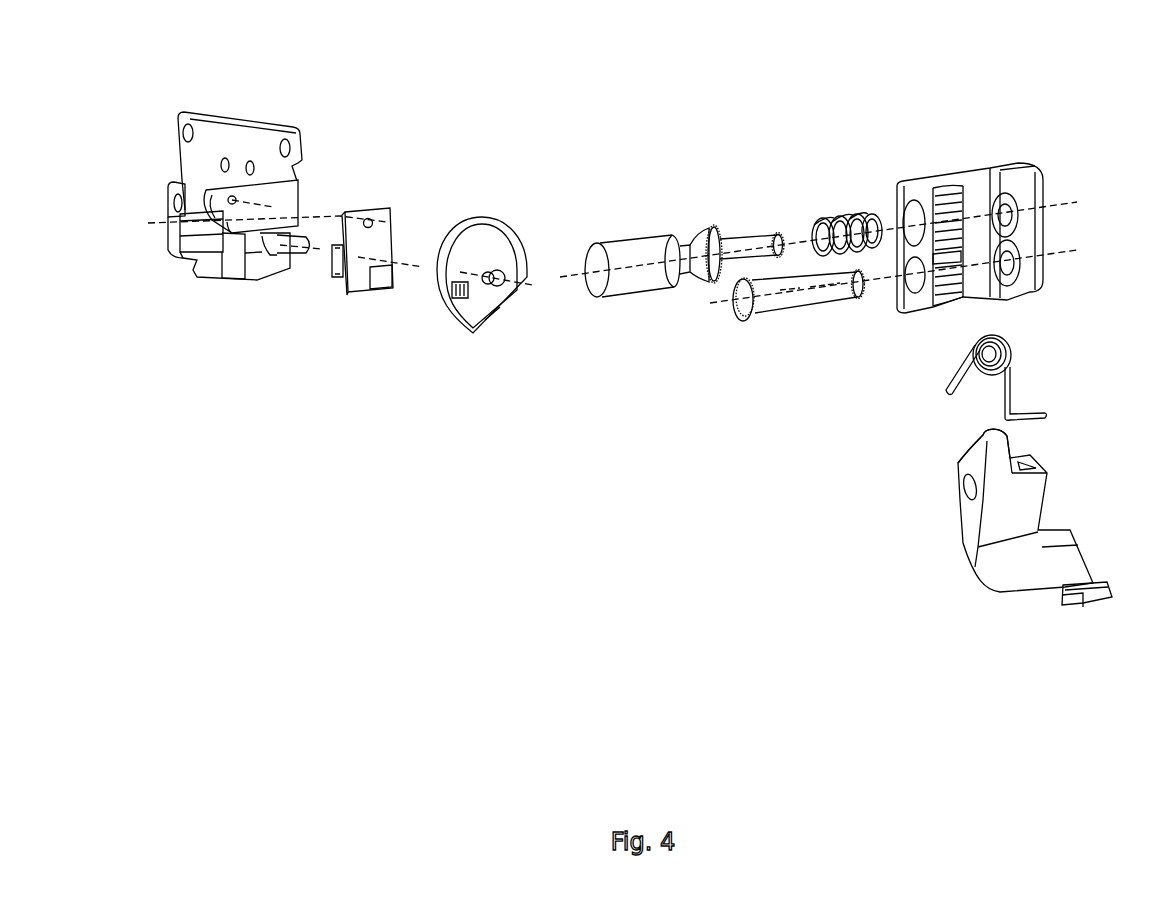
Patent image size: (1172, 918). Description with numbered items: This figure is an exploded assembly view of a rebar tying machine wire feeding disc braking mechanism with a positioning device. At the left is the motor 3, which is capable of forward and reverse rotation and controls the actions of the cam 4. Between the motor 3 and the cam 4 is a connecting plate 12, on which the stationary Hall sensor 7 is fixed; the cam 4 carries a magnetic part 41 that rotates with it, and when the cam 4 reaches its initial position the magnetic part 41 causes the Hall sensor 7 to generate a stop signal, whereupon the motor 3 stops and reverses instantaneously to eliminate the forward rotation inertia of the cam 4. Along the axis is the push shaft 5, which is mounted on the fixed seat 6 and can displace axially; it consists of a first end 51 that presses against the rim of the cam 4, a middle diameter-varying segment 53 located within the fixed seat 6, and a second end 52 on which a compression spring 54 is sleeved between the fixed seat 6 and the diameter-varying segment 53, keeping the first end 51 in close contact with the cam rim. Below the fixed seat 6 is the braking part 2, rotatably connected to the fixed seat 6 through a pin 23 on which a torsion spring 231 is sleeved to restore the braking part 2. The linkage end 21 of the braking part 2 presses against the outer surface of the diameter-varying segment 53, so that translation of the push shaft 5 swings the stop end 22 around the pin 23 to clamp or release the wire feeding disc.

The braking part 2 is at (1030, 502).
The linkage end 21 is at (997, 442).
The stop end 22 is at (1080, 607).
The pin 23 is at (775, 305).
The torsion spring 231 is at (1013, 352).
The motor 3 is at (191, 210).
The cam 4 is at (474, 336).
The magnetic part 41 is at (447, 308).
The push shaft 5 is at (706, 158).
The first end 51 is at (657, 253).
The second end 52 is at (758, 237).
The diameter-varying segment 53 is at (712, 237).
The compression spring 54 is at (850, 217).
The fixed seat 6 is at (973, 183).
The Hall sensor 7 is at (388, 262).
The connecting plate 12 is at (382, 210).